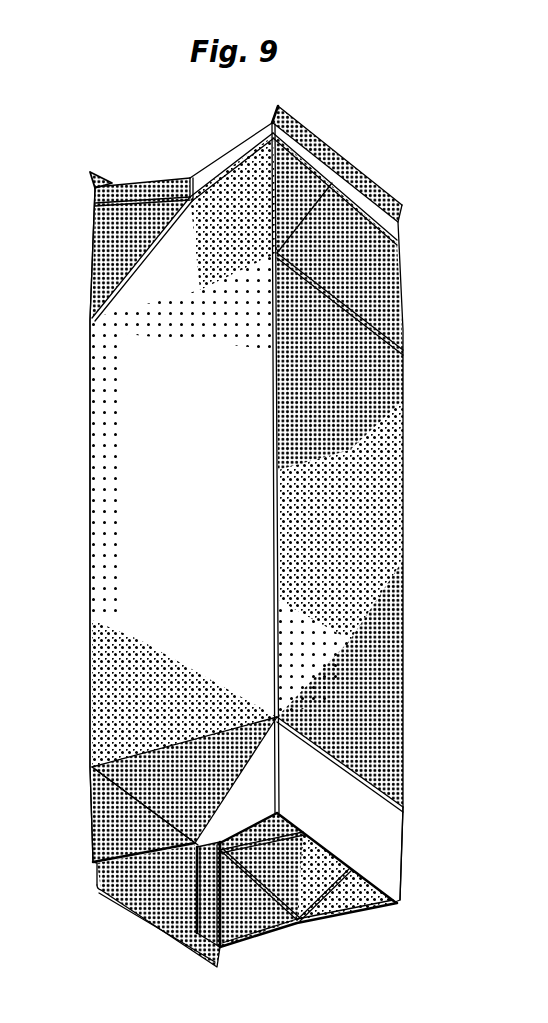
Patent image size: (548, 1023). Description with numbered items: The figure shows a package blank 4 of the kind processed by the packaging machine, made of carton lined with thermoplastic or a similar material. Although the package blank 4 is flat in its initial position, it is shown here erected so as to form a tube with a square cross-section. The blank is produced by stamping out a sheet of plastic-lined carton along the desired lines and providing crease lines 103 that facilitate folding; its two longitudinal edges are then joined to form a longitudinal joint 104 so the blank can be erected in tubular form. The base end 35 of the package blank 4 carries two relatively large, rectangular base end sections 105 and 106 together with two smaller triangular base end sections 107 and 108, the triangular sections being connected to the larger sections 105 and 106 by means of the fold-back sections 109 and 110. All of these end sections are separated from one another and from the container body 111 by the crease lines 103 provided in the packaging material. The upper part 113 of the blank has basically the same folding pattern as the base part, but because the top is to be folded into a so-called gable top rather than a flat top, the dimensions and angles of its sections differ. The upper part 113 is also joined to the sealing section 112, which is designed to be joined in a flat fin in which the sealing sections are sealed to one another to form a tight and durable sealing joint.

The package blank 4 is at (86, 532).
The base end 35 is at (103, 838).
The crease lines 103 is at (388, 334).
The longitudinal joint 104 is at (208, 935).
The rectangular base end section 105 is at (390, 867).
The rectangular base end section 106 is at (145, 897).
The triangular base end section 107 is at (229, 733).
The triangular base end section 108 is at (297, 900).
The fold-back section 109 is at (258, 797).
The fold-back section 110 is at (240, 923).
The container body 111 is at (107, 405).
The sealing section 112 is at (385, 190).
The upper part 113 is at (385, 272).